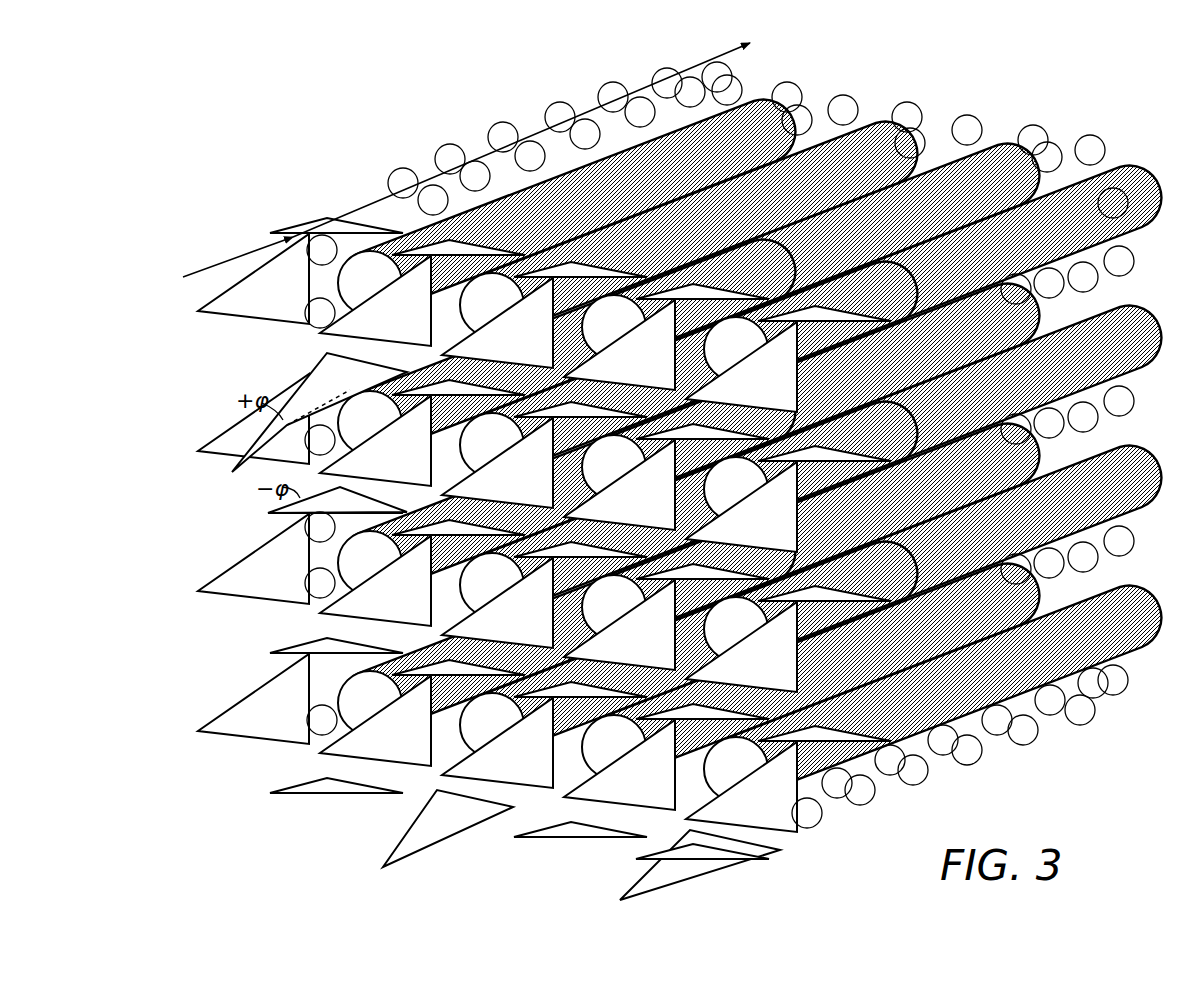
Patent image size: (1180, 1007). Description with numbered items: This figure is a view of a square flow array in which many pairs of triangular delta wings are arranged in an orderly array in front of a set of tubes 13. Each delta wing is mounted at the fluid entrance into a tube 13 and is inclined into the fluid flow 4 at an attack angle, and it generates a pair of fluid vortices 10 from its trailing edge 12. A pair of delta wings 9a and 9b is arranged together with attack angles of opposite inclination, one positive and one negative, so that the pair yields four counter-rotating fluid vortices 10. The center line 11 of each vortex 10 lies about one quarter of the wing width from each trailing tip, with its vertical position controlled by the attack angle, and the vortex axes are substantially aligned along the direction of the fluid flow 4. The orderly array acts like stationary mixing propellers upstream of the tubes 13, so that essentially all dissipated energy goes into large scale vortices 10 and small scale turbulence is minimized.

The fluid flow 4 is at (212, 270).
The delta wing 9a is at (352, 385).
The delta wing 9b is at (268, 513).
The counter-rotating fluid vortices 10 is at (433, 186).
The center line of vortex 11 is at (490, 164).
The trailing edge 12 is at (263, 226).
The tube 13 is at (382, 301).